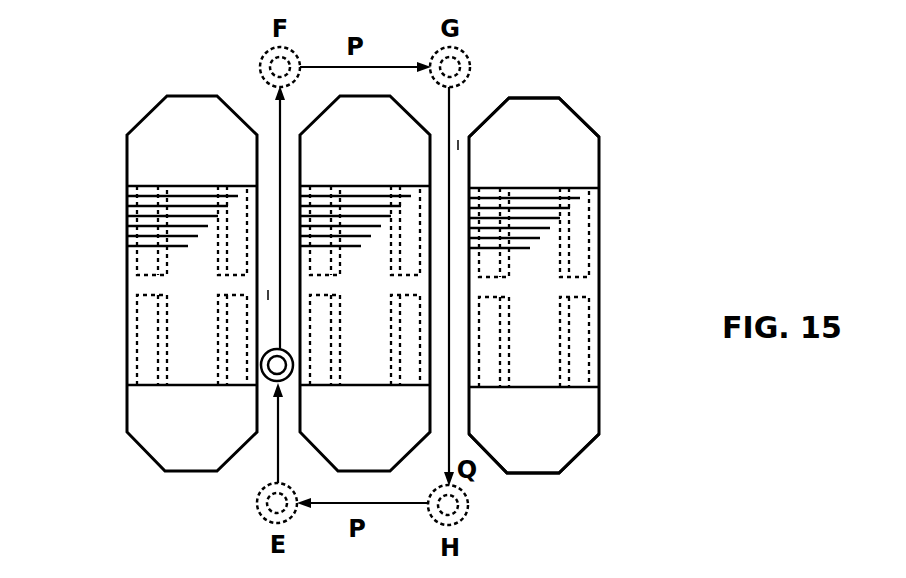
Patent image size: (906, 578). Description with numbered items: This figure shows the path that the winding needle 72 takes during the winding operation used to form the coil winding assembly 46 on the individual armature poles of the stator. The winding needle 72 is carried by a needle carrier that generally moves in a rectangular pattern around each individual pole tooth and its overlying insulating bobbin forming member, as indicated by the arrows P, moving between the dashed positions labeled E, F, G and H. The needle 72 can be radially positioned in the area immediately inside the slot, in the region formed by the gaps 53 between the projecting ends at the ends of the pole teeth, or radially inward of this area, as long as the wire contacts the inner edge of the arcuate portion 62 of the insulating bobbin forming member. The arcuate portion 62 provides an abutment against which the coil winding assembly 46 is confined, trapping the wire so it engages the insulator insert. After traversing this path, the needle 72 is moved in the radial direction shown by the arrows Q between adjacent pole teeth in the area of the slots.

The coil winding assembly 46 is at (601, 210).
The gaps 53 is at (268, 295).
The arcuate portion 62 is at (563, 120).
The winding needle 72 is at (272, 383).